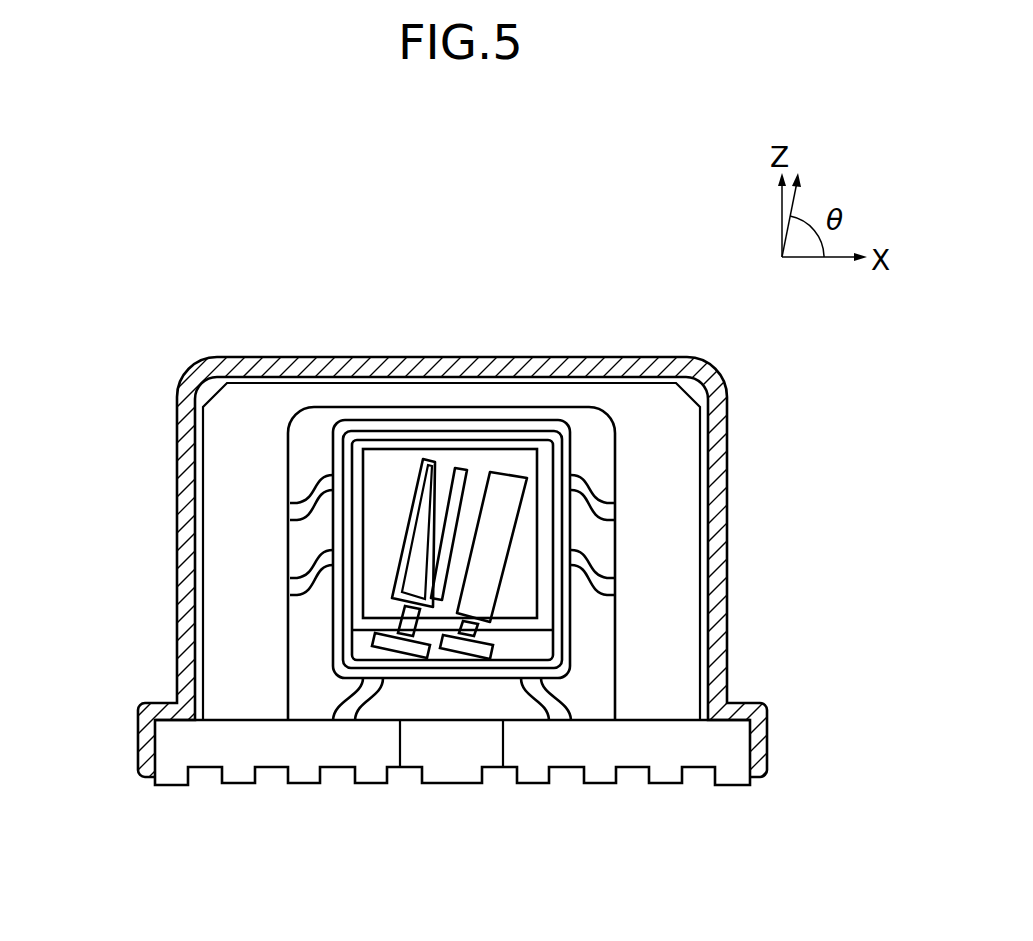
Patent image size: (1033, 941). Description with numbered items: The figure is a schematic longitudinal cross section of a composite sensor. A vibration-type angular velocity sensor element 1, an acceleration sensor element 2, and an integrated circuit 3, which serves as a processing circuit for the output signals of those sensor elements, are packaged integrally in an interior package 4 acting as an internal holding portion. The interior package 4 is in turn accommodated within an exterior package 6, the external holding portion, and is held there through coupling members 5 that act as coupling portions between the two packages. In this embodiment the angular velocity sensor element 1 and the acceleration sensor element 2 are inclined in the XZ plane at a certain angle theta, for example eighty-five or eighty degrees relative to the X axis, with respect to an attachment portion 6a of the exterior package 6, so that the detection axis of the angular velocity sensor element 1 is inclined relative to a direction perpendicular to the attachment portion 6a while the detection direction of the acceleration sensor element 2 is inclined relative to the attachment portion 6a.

The vibration-type angular velocity sensor element 1 is at (406, 480).
The acceleration sensor element 2 is at (515, 461).
The integrated circuit 3 is at (455, 432).
The interior package 4 is at (571, 604).
The coupling members 5 is at (297, 557).
The exterior package 6 is at (177, 398).
The attachment portion 6a is at (558, 753).